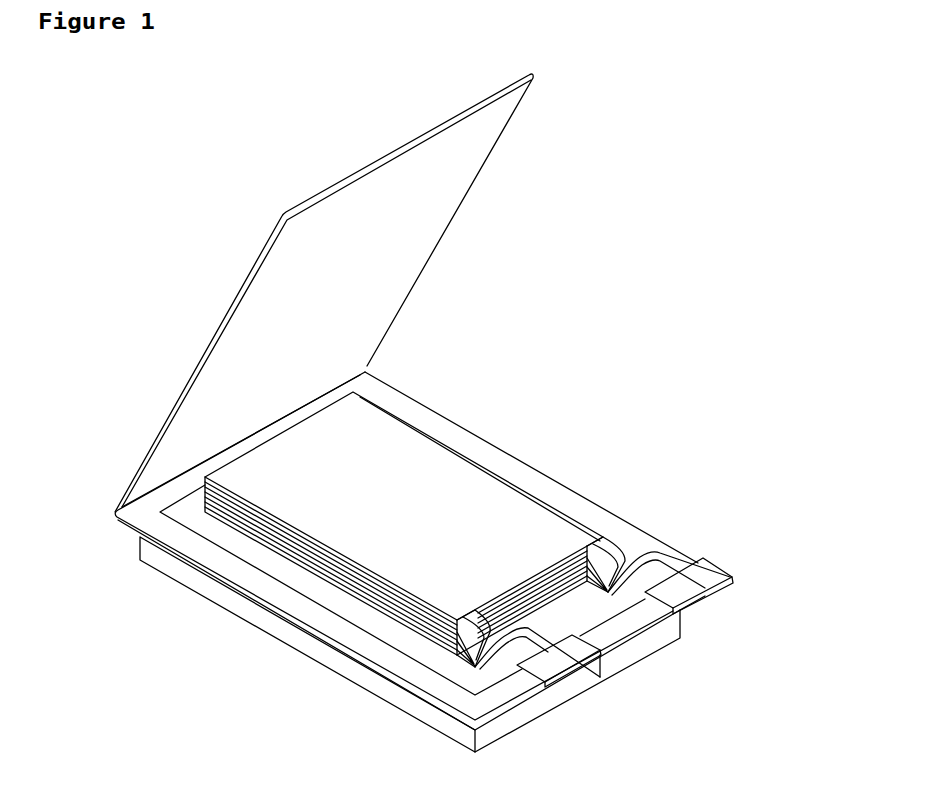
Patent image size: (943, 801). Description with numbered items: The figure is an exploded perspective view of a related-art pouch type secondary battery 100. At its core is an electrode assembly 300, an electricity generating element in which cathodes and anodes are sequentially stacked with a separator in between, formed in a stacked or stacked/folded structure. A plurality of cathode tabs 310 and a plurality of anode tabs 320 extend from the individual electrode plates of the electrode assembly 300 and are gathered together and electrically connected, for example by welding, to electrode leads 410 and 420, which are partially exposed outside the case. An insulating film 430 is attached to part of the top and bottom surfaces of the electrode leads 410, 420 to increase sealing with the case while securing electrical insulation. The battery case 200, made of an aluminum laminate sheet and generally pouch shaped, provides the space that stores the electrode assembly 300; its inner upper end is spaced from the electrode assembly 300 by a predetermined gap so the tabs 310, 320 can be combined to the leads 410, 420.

The pouch type secondary battery 100 is at (311, 161).
The battery case 200 is at (137, 536).
The electrode assembly 300 is at (474, 450).
The cathode tab 310 is at (474, 658).
The anode tab 320 is at (607, 556).
The electrode lead 410 is at (594, 678).
The electrode lead 420 is at (716, 602).
The insulating film 430 is at (588, 637).